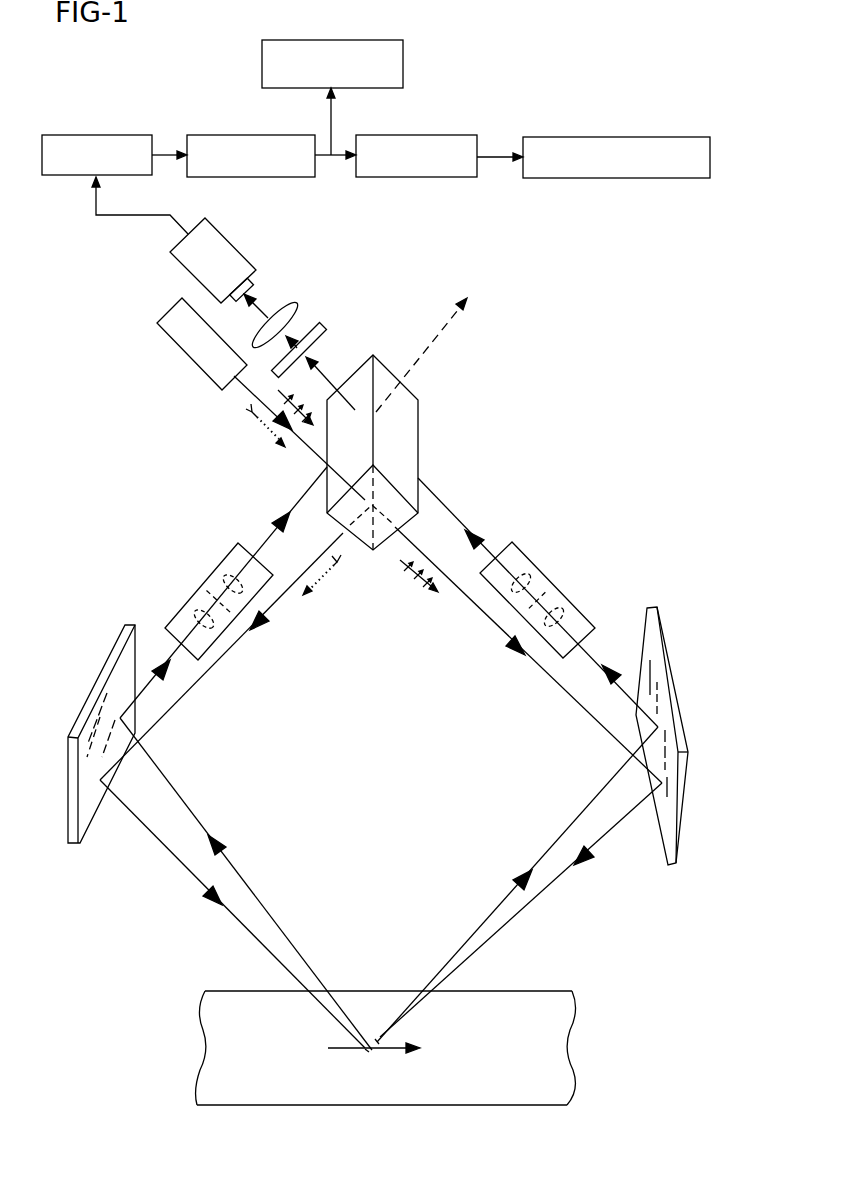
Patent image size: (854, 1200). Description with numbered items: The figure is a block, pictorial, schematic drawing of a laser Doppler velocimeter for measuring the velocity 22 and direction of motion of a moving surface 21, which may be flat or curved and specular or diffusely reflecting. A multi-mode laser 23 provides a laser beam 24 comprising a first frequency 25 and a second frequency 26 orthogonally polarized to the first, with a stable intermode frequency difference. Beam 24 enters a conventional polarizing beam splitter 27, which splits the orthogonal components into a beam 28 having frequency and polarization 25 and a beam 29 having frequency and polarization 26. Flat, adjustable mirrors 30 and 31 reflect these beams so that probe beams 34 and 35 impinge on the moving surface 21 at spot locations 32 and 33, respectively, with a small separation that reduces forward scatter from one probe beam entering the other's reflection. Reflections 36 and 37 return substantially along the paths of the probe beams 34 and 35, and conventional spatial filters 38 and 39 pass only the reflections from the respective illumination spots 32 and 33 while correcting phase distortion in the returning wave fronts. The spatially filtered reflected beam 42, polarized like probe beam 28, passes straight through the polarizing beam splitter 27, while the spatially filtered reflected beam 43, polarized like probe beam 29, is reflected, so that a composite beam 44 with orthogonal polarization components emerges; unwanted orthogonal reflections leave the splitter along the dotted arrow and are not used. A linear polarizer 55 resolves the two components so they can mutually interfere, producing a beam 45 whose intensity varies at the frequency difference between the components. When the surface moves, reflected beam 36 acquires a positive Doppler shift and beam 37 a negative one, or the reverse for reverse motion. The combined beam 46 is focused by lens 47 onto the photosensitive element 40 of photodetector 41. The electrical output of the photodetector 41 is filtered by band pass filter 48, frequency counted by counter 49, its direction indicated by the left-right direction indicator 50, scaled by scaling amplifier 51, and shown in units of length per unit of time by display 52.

The surface 21 is at (527, 1003).
The velocity 22 is at (340, 1049).
The multi-mode laser 23 is at (200, 367).
The laser beam 24 is at (243, 385).
The first frequency 25 is at (310, 395).
The second frequency 26 is at (276, 443).
The polarizing beam splitter 27 is at (420, 401).
The beam 28 is at (540, 667).
The beam 29 is at (202, 678).
The mirror 30 is at (661, 630).
The mirror 31 is at (121, 631).
The spot location 32 is at (377, 1033).
The spot location 33 is at (366, 1050).
The probe beam 34 is at (500, 929).
The probe beam 35 is at (247, 929).
The reflected beam 36 is at (497, 908).
The reflected beam 37 is at (269, 914).
The spatial filter 38 is at (577, 608).
The spatial filter 39 is at (191, 598).
The photosensitive element 40 is at (252, 285).
The photodetector 41 is at (236, 249).
The spatially filtered reflected beam 42 is at (467, 529).
The spatially filtered reflected beam 43 is at (296, 504).
The composite beam 44 is at (374, 358).
The beam 45 is at (324, 330).
The beam 46 is at (296, 304).
The lens 47 is at (259, 333).
The band pass filter 48 is at (85, 135).
The counter 49 is at (214, 135).
The direction indicator 50 is at (403, 62).
The scaling amplifier 51 is at (430, 135).
The display 52 is at (640, 137).
The linear polarizer 55 is at (328, 338).